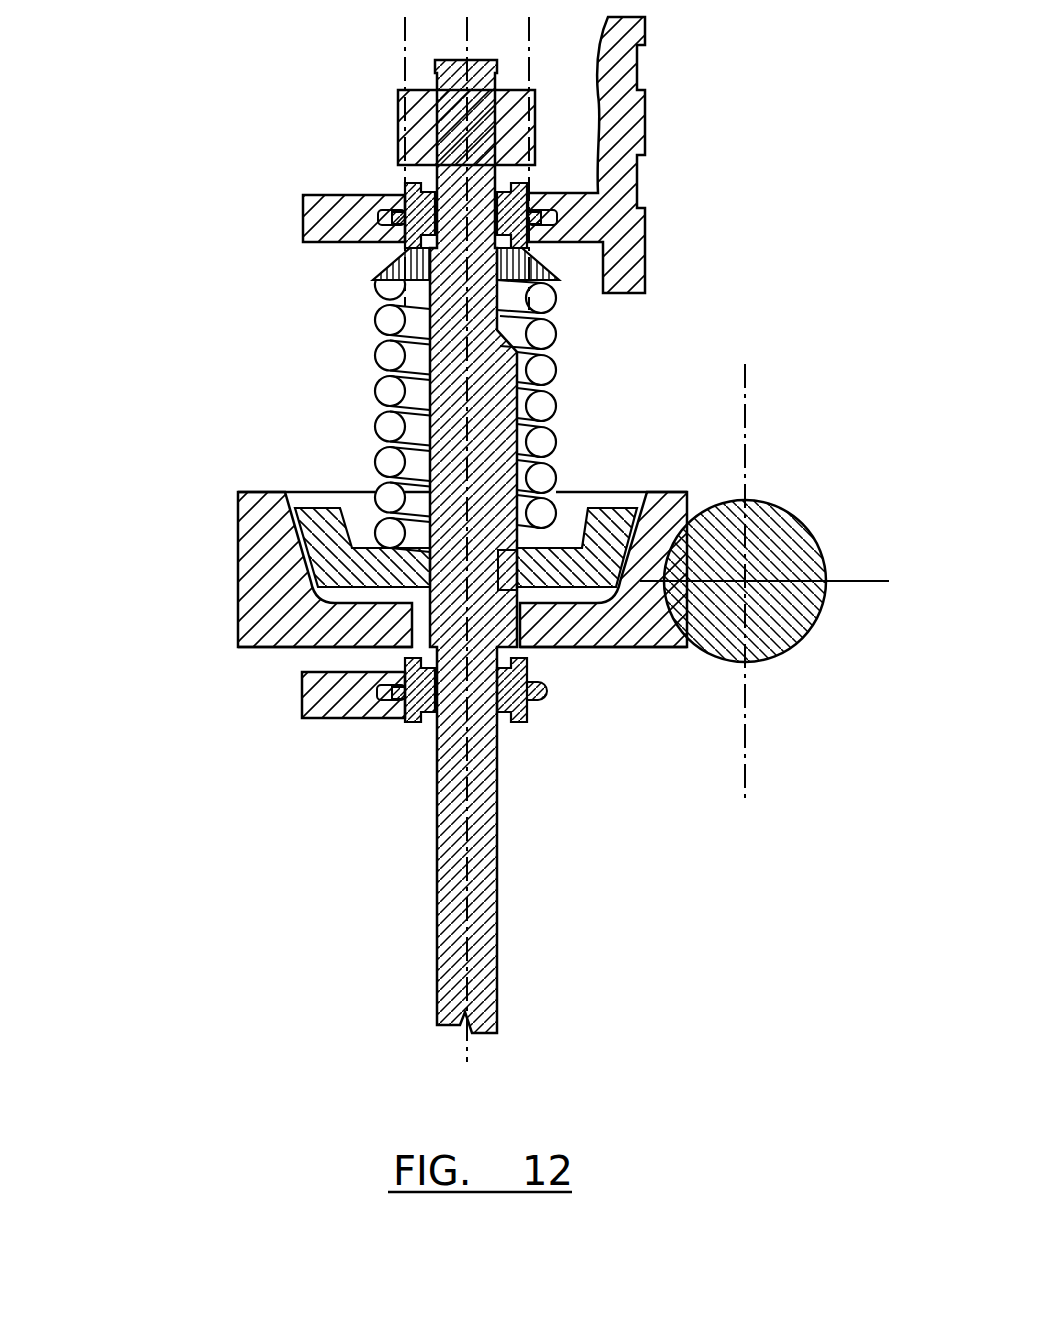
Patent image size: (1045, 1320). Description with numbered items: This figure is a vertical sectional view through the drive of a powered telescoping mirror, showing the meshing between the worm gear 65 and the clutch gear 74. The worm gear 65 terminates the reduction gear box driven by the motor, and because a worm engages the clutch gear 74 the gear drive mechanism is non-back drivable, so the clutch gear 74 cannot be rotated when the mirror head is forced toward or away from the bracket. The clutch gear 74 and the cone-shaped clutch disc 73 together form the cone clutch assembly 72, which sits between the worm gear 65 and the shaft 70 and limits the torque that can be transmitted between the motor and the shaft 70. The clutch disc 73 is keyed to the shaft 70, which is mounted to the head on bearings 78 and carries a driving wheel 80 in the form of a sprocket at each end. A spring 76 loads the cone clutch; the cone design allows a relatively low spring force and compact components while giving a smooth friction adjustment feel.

The worm gear 65 is at (745, 612).
The shaft 70 is at (398, 546).
The cone clutch assembly 72 is at (190, 523).
The cone-shaped clutch disc 73 is at (386, 549).
The clutch gear 74 is at (399, 580).
The spring 76 is at (404, 416).
The bearings 78 is at (561, 465).
The driving wheel 80 is at (564, 127).